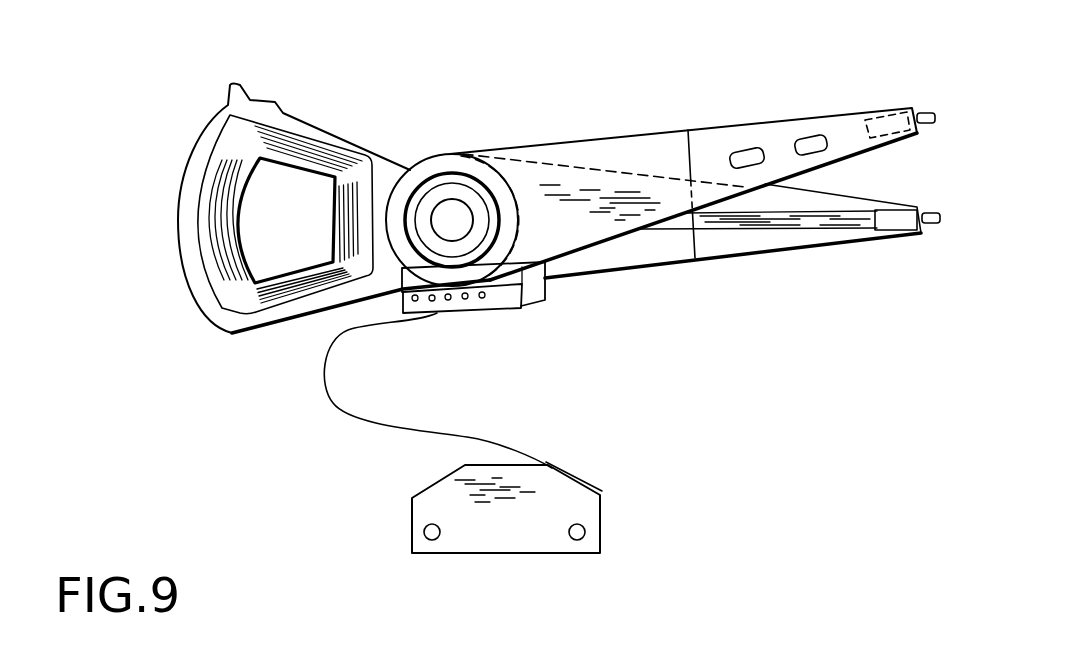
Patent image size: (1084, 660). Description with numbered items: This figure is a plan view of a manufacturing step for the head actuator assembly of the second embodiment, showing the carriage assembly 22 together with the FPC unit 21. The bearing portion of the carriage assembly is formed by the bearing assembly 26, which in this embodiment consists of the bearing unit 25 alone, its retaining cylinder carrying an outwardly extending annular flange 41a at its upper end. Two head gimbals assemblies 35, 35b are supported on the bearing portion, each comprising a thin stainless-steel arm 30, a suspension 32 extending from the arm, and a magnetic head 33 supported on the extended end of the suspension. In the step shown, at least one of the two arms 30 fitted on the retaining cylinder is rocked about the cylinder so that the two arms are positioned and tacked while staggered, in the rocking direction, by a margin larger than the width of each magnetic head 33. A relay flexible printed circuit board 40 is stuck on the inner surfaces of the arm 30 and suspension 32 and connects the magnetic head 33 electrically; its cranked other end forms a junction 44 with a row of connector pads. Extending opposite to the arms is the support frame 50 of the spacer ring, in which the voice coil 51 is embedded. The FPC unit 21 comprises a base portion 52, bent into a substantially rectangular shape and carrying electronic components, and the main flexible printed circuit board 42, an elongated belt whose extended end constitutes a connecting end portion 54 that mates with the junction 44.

The FPC unit 21 is at (365, 520).
The carriage assembly 22 is at (570, 78).
The bearing unit 25 is at (470, 197).
The bearing assembly 26 is at (420, 142).
The arm 30 is at (620, 140).
The suspension 32 is at (765, 130).
The magnetic head 33 is at (885, 107).
The head gimbals assembly 35 is at (692, 108).
The head gimbals assembly 35b is at (706, 270).
The relay flexible printed circuit board 40 is at (827, 223).
The annular flange 41a is at (443, 163).
The main flexible printed circuit board 42 is at (325, 388).
The junction 44 is at (436, 312).
The support frame 50 is at (190, 178).
The voice coil 51 is at (222, 283).
The base portion 52 is at (525, 542).
The connecting end portion 54 is at (500, 310).